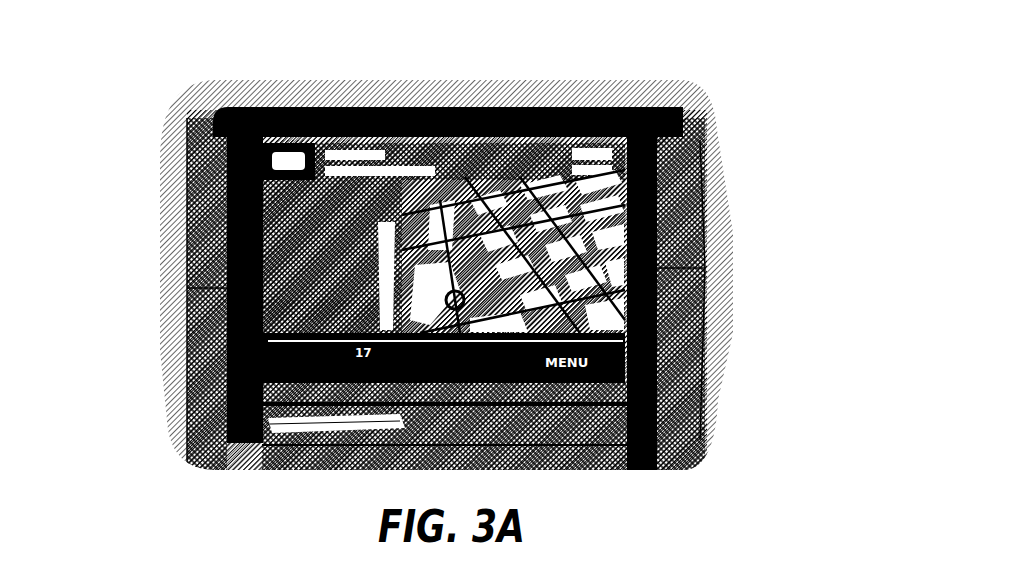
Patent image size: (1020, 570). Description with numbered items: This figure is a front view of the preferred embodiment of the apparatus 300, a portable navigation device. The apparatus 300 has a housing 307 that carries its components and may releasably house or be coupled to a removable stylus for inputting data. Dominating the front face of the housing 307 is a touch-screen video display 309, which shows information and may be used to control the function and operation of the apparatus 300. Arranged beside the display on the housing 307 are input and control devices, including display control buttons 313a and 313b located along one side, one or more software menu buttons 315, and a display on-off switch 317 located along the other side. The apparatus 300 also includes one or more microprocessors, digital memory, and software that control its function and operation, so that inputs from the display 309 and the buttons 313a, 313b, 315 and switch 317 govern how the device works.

The apparatus 300 is at (780, 110).
The housing 307 is at (535, 80).
The touch-screen video display 309 is at (297, 167).
The display control button 313a is at (687, 210).
The display control button 313b is at (690, 305).
The software menu button 315 is at (192, 220).
The display on-off switch 317 is at (198, 333).